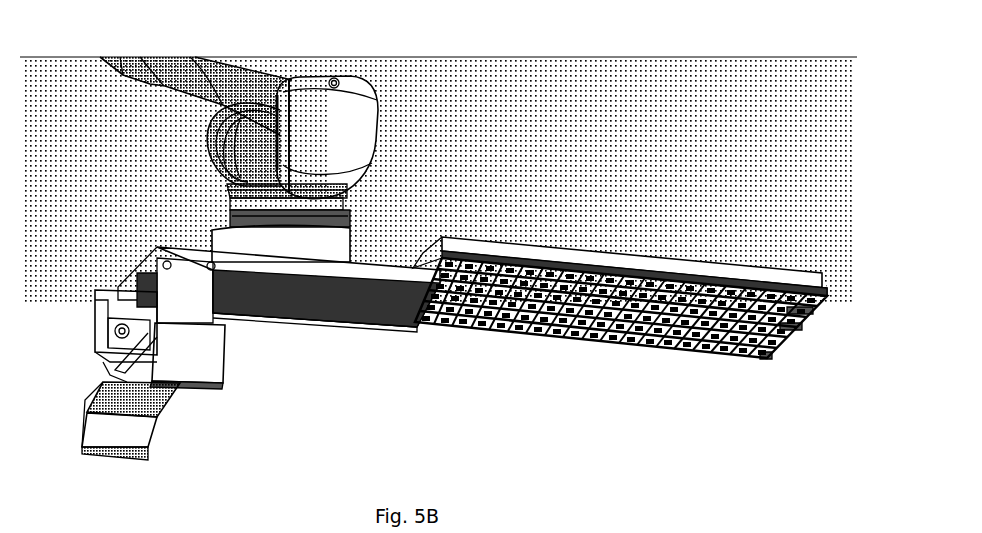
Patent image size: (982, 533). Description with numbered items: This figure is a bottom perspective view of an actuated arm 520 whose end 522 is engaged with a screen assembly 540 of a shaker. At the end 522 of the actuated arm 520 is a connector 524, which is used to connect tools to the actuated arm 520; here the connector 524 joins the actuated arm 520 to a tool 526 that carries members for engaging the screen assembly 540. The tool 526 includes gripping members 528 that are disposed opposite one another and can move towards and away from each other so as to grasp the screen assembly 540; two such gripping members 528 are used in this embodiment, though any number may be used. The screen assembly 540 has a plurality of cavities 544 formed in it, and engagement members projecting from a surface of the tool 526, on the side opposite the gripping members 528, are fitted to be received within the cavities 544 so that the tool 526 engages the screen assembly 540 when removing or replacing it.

The actuated arm 520 is at (110, 66).
The end of the actuated arm 522 is at (420, 152).
The connector 524 is at (347, 223).
The tool 526 is at (313, 332).
The gripping members 528 is at (153, 416).
The screen assembly 540 is at (632, 252).
The cavities 544 is at (648, 343).